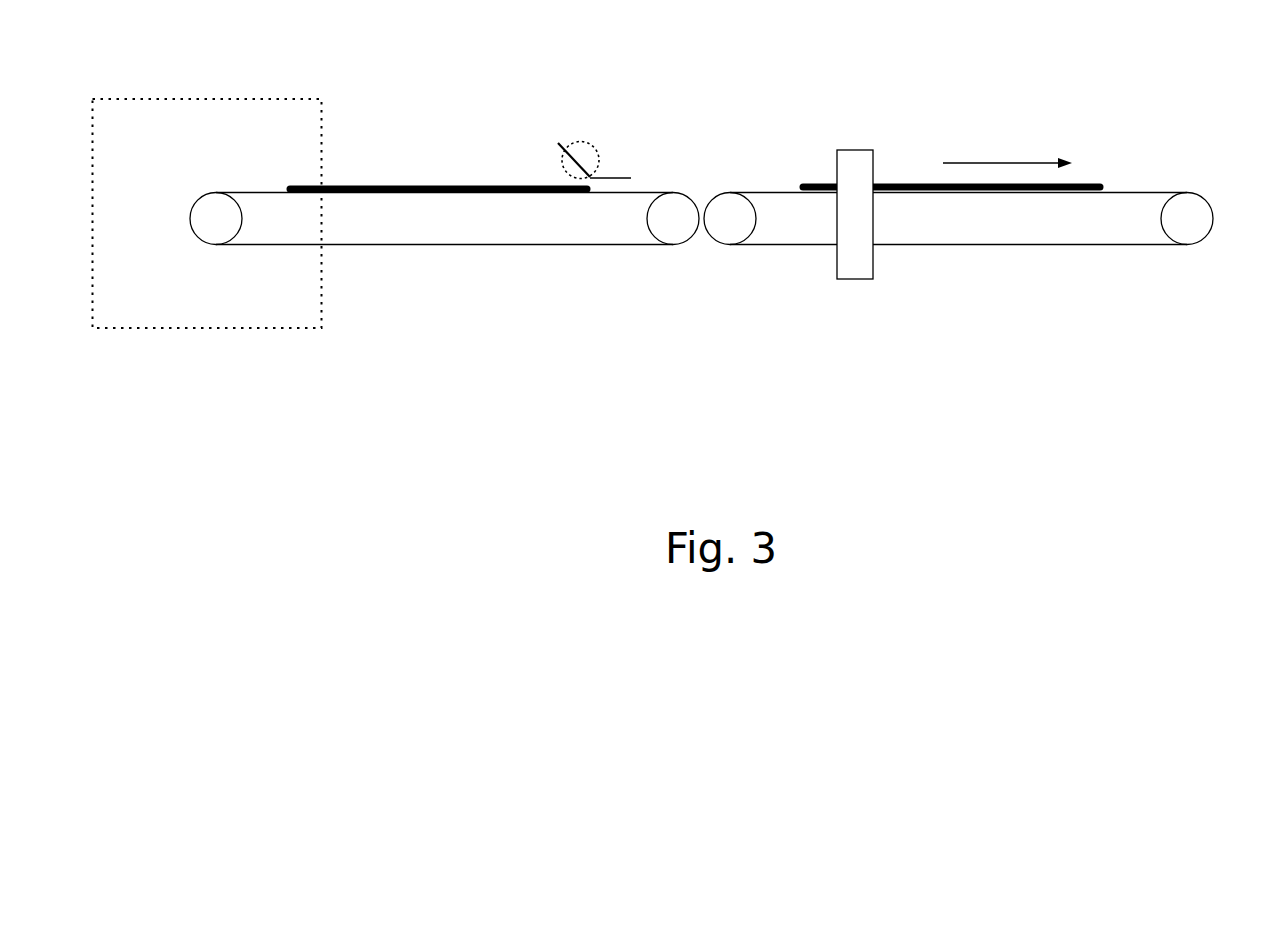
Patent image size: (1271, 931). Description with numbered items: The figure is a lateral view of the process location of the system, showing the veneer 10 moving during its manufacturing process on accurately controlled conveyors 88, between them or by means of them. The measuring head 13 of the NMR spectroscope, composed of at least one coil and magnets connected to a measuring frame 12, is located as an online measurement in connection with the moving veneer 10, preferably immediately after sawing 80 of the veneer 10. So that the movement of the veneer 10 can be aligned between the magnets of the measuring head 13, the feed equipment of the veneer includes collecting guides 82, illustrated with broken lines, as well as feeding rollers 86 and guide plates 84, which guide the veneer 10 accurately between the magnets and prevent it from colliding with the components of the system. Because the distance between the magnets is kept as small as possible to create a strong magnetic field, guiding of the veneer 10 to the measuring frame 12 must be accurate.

The veneer 10 is at (900, 183).
The measuring frame 12 is at (852, 245).
The measuring head 13 is at (876, 180).
The sawing 80 is at (320, 141).
The collecting guides 82 is at (581, 95).
The guide plates 84 is at (612, 178).
The feeding rollers 86 is at (567, 172).
The conveyors 88 is at (1037, 245).